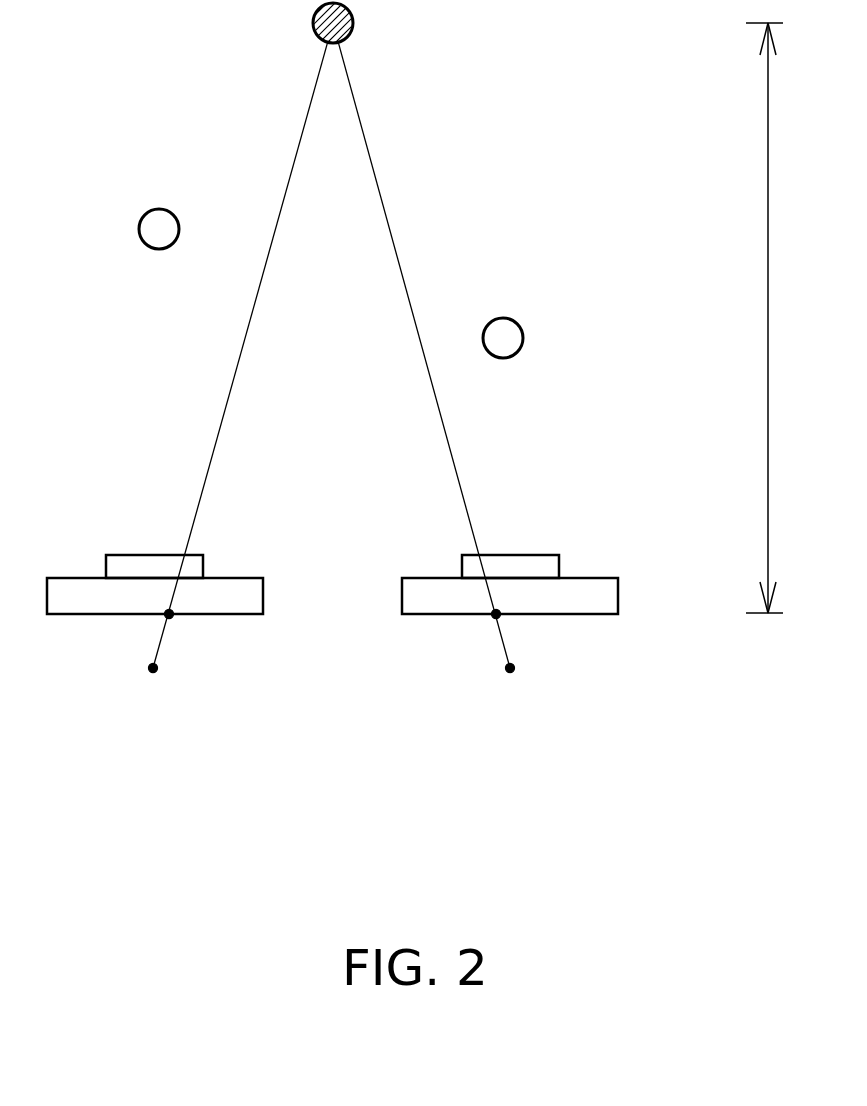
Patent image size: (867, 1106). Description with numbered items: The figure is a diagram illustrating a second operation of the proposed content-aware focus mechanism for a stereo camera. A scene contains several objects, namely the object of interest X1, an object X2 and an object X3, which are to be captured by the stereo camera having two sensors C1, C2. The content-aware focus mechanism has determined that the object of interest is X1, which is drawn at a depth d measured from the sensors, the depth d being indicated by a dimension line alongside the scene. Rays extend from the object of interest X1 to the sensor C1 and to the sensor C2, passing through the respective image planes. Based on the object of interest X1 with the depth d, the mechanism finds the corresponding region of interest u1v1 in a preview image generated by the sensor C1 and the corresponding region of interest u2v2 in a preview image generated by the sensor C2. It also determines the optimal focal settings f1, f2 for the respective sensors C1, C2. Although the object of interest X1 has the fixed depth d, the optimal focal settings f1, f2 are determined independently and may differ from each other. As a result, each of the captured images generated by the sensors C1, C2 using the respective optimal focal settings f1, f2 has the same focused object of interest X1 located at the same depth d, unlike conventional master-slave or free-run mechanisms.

The object of interest X1 is at (346, 35).
The object X2 is at (165, 213).
The object X3 is at (504, 320).
The optimal focal setting f1 is at (169, 584).
The optimal focal setting f2 is at (524, 584).
The region of interest u1v1 is at (208, 629).
The region of interest u2v2 is at (538, 629).
The sensor C1 is at (160, 687).
The sensor C2 is at (528, 687).
The depth d is at (772, 318).